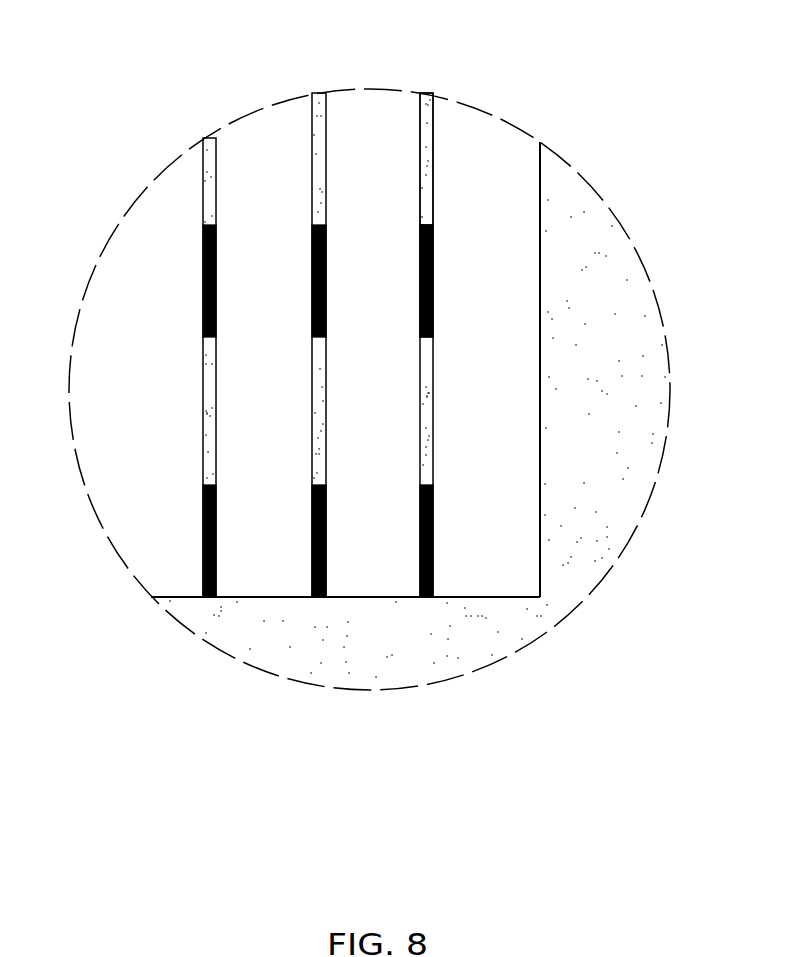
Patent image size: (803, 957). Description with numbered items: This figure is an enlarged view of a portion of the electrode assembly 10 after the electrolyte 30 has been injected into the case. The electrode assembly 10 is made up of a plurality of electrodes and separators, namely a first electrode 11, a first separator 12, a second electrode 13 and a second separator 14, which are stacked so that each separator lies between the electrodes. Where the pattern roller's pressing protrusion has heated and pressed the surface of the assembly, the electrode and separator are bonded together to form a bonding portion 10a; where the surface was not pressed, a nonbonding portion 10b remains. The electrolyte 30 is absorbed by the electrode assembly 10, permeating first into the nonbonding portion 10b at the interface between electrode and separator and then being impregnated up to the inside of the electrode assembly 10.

The electrode assembly 10 is at (150, 742).
The bonding portion 10a is at (432, 276).
The nonbonding portion 10b is at (433, 148).
The first electrode 11 is at (492, 580).
The first separator 12 is at (377, 580).
The second electrode 13 is at (265, 580).
The second separator 14 is at (160, 580).
The electrolyte 30 is at (208, 415).